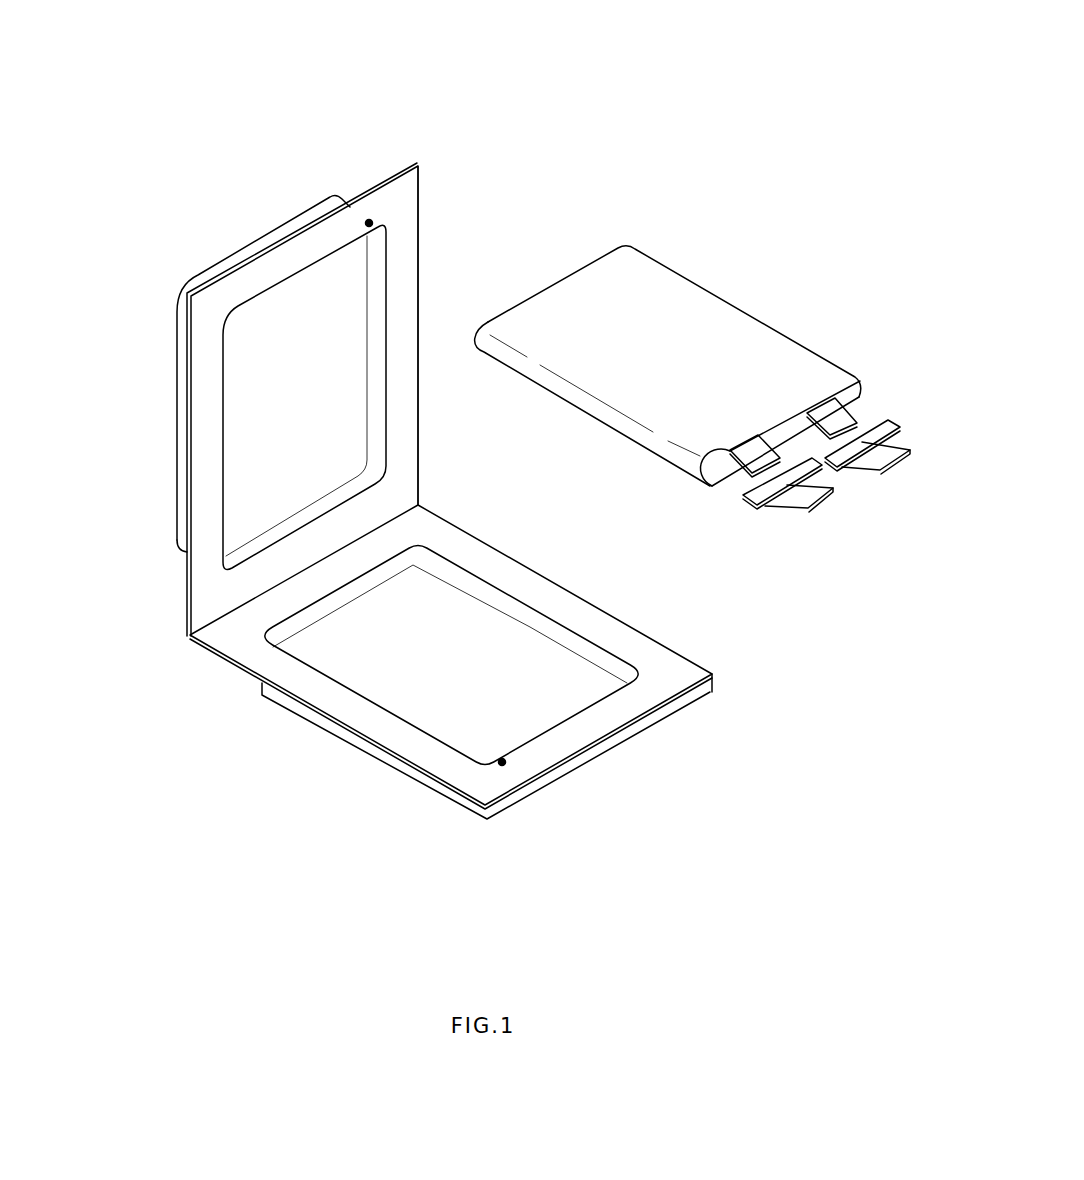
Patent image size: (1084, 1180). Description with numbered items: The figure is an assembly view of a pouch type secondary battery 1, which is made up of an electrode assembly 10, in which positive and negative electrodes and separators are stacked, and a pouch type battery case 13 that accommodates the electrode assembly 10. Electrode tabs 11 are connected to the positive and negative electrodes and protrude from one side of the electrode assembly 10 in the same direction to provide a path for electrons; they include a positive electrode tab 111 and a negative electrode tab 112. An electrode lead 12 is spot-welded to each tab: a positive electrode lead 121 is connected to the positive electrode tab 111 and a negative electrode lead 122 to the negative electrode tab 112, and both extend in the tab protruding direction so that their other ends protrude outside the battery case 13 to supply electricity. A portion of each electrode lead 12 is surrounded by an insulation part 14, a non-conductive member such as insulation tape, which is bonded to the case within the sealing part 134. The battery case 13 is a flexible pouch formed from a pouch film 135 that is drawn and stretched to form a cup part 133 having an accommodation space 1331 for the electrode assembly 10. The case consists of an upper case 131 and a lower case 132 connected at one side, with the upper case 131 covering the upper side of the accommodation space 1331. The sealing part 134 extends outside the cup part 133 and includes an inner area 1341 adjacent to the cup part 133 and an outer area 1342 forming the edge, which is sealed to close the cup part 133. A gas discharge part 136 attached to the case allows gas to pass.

The pouch type secondary battery 1 is at (586, 84).
The electrode assembly 10 is at (840, 262).
The electrode tabs 11 is at (668, 376).
The positive electrode tab 111 is at (808, 404).
The negative electrode tab 112 is at (702, 472).
The electrode lead 12 is at (863, 558).
The positive electrode lead 121 is at (893, 457).
The negative electrode lead 122 is at (817, 495).
The battery case 13 is at (99, 326).
The upper case 131 is at (180, 337).
The lower case 132 is at (238, 655).
The cup part 133 is at (366, 752).
The accommodation space 1331 is at (512, 727).
The sealing part 134 is at (804, 645).
The inner area 1341 is at (653, 676).
The outer area 1342 is at (673, 683).
The pouch film 135 is at (419, 166).
The gas discharge part 136 is at (372, 224).
The insulation part 14 is at (803, 470).